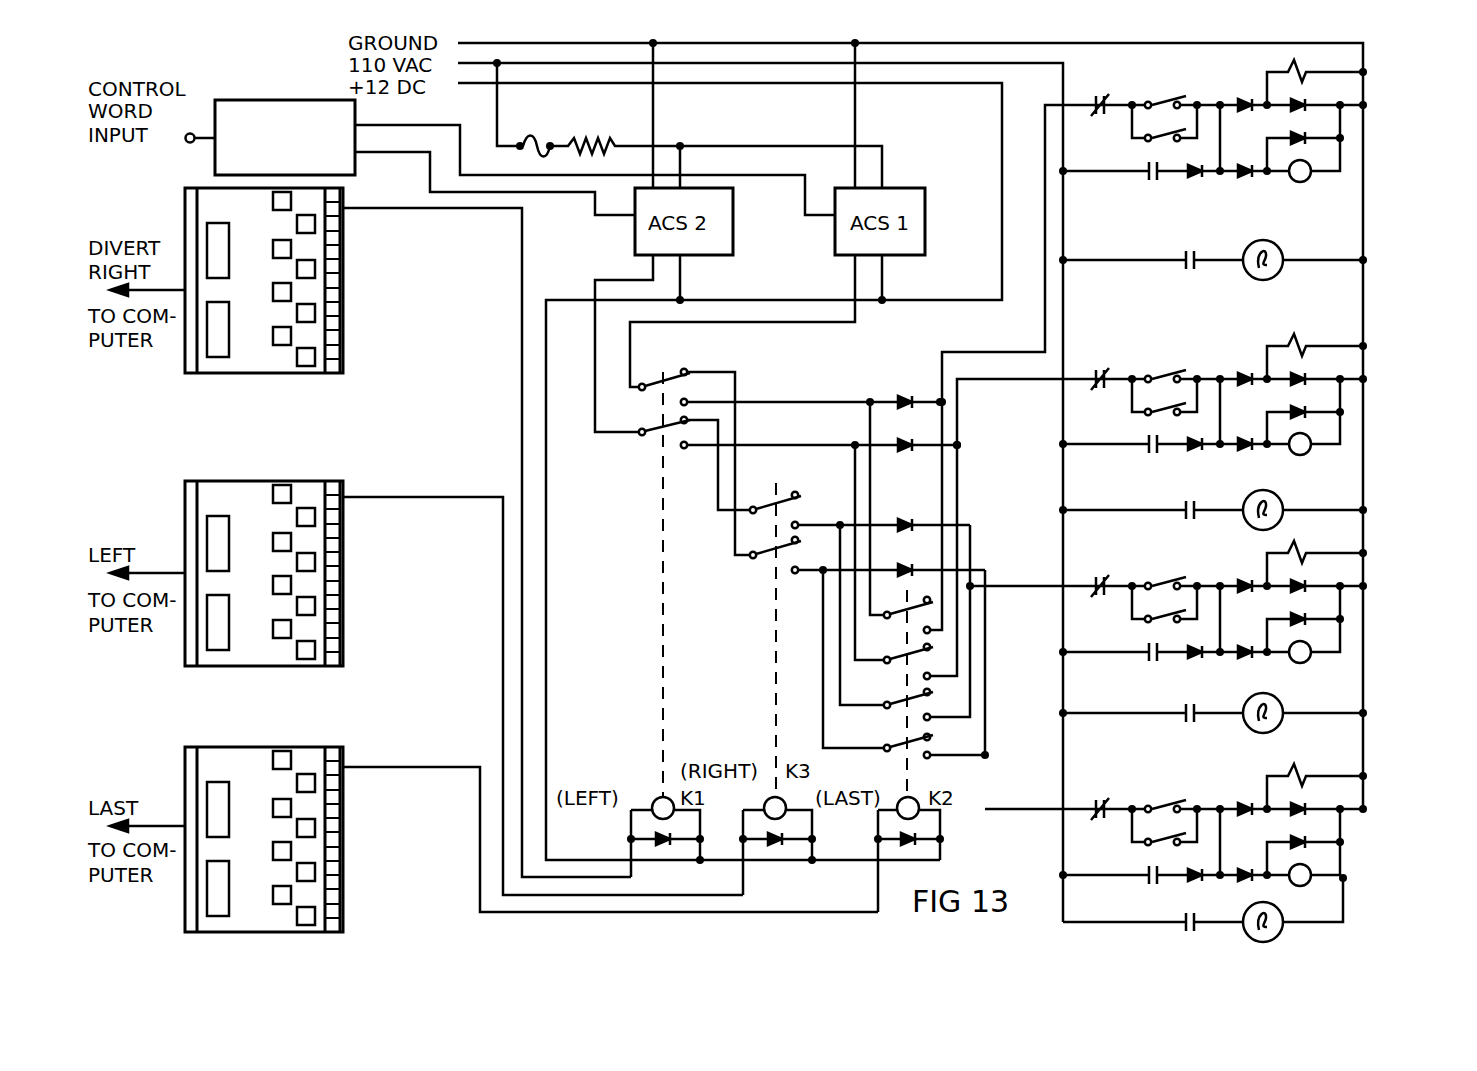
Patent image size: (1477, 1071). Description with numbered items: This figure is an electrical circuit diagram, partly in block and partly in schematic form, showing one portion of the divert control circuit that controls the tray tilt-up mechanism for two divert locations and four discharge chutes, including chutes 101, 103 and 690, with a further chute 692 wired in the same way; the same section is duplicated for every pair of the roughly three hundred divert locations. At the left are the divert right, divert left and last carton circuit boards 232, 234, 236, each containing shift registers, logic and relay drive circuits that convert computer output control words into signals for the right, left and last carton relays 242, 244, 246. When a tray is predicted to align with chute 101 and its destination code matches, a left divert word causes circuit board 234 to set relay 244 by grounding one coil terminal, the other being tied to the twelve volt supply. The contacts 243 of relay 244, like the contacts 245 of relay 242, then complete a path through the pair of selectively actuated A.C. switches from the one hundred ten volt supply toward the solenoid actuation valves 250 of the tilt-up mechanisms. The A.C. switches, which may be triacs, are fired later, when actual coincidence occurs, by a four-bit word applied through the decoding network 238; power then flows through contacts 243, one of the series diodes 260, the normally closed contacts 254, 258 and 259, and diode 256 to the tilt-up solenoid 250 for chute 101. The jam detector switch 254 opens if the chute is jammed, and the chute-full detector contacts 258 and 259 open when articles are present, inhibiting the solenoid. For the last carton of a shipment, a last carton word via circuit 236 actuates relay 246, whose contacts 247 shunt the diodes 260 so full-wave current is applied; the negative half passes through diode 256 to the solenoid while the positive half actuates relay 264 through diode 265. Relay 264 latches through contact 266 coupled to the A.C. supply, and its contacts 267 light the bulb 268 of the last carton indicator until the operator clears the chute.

The decoding network 238 is at (265, 100).
The divert right circuit board 232 is at (236, 376).
The divert left circuit board 234 is at (242, 481).
The last carton circuit board 236 is at (240, 748).
The contacts of relay 244 243 is at (655, 402).
The contacts of relay 242 245 is at (804, 512).
The contacts of relay 246 247 is at (876, 681).
The diodes 260 is at (914, 566).
The left divert relay 244 is at (656, 797).
The right divert relay 242 is at (786, 828).
The last carton relay 246 is at (920, 815).
The solenoid actuation valve 250 is at (1292, 72).
The control switch 254 is at (1102, 376).
The switch contacts 259 is at (1165, 372).
The switch contacts 258 is at (1160, 416).
The diode 256 is at (1243, 373).
The contact 266 is at (1147, 457).
The diode 265 is at (1244, 453).
The relay 264 is at (1300, 456).
The contacts 267 is at (1185, 521).
The bulb 268 is at (1258, 527).
The discharge chute 103 is at (1250, 170).
The discharge chute 101 is at (1250, 434).
The discharge chute 690 is at (1250, 637).
The chute 692 circuit 692 is at (1250, 853).